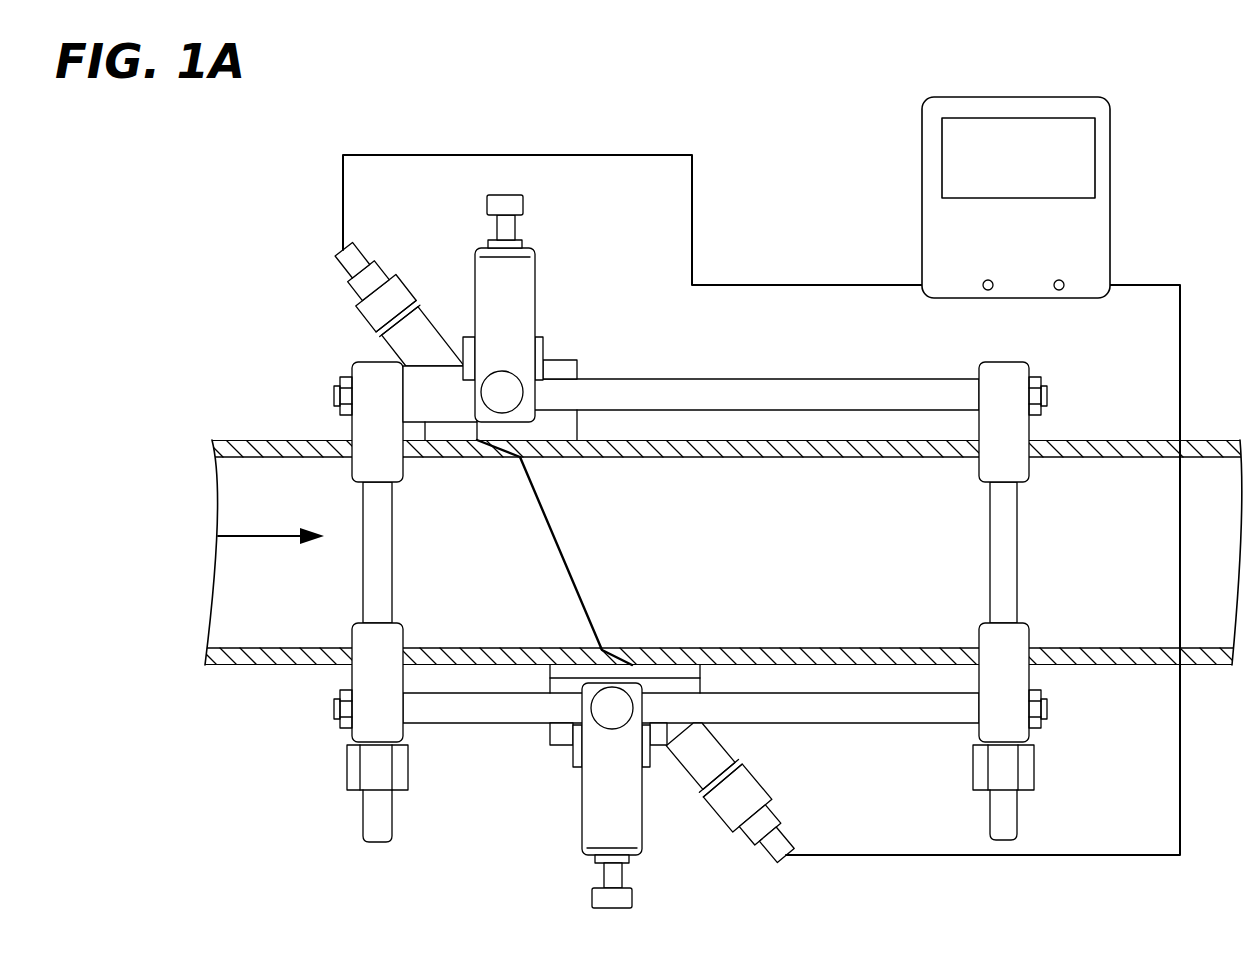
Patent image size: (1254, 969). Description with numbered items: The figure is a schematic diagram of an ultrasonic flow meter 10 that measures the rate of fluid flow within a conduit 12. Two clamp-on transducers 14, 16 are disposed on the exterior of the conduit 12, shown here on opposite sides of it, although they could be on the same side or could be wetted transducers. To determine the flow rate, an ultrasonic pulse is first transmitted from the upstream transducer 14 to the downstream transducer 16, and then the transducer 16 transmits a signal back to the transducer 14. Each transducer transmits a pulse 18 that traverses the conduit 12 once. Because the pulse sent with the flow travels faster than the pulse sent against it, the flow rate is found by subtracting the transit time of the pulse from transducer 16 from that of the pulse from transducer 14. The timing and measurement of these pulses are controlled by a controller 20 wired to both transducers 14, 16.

The ultrasonic flow meter 10 is at (225, 861).
The conduit 12 is at (287, 665).
The upstream transducer 14 is at (572, 360).
The downstream transducer 16 is at (548, 735).
The pulse 18 is at (560, 553).
The controller 20 is at (922, 176).